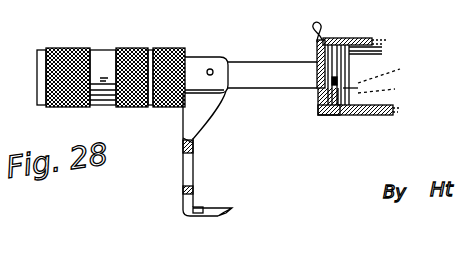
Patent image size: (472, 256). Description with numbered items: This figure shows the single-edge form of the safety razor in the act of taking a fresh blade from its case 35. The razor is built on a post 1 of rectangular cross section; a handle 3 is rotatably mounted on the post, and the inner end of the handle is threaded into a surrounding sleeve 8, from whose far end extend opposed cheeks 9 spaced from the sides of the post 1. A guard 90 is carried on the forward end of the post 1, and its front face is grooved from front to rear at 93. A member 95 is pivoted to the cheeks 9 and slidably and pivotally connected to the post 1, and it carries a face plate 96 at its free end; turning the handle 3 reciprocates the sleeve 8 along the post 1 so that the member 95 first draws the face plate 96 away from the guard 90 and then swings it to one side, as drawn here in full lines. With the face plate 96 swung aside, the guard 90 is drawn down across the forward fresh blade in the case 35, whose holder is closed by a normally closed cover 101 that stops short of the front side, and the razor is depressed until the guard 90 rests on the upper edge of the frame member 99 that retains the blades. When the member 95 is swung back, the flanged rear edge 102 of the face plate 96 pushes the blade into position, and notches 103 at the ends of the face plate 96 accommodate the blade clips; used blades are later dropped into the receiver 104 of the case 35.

The post 1 is at (281, 84).
The handle 3 is at (67, 52).
The sleeve 8 is at (140, 48).
The cheeks 9 is at (201, 57).
The case 35 is at (353, 113).
The guard 90 is at (316, 48).
The grooves 93 is at (338, 38).
The member 95 is at (203, 116).
The face plate 96 is at (228, 214).
The frame member 99 is at (370, 91).
The cover 101 is at (357, 38).
The flanged rear edge 102 is at (183, 206).
The notches 103 is at (200, 206).
The receiver 104 is at (383, 63).